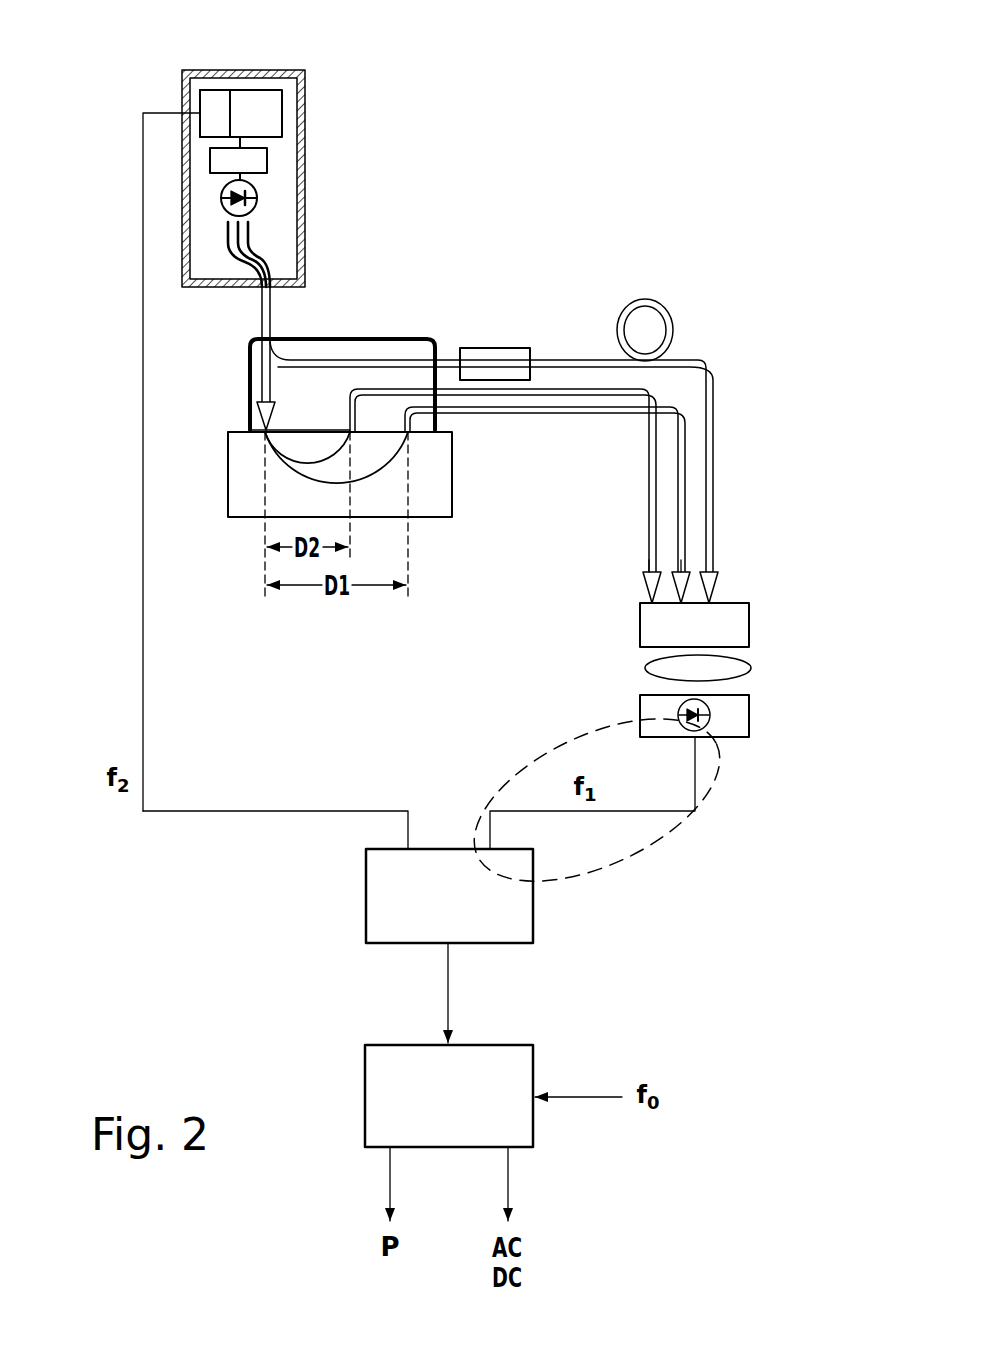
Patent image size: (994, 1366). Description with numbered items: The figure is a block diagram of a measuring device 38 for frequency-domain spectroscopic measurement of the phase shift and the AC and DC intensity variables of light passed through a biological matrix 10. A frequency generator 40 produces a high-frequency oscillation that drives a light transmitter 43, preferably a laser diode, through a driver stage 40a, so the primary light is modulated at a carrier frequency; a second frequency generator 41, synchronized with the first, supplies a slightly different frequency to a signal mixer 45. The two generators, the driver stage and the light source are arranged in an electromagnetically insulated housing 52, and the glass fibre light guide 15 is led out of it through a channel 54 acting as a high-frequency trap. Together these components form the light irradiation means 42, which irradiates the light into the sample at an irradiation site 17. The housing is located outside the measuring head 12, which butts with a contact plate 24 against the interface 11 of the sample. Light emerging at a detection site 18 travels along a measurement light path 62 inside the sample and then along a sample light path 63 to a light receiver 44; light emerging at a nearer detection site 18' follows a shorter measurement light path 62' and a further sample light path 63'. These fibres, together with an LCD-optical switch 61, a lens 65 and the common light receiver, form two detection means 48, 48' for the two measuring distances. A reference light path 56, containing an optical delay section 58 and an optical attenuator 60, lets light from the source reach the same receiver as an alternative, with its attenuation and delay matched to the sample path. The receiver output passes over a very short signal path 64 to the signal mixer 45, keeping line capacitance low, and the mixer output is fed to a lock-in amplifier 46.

The biological matrix 10 is at (457, 458).
The interface 11 is at (244, 426).
The measuring head 12 is at (248, 356).
The glass fibre light guide 15 is at (271, 320).
The irradiation site 17 is at (262, 437).
The detection site 18 is at (455, 497).
The detection site 18' is at (403, 497).
The contact plate 24 is at (292, 423).
The measuring device 38 is at (556, 260).
The frequency generator 40 is at (265, 115).
The driver stage 40a is at (258, 165).
The second frequency generator 41 is at (217, 100).
The light irradiation means 42 is at (338, 288).
The light transmitter 43 is at (221, 201).
The light receiver 44 is at (735, 718).
The signal mixer 45 is at (463, 912).
The lock-in amplifier 46 is at (463, 1107).
The detection means 48 is at (730, 552).
The detection means 48' is at (617, 552).
The housing 52 is at (183, 92).
The channel 54 is at (280, 238).
The reference light path 56 is at (565, 358).
The optical delay section 58 is at (673, 318).
The optical attenuator 60 is at (483, 348).
The LCD-optical switch 61 is at (735, 625).
The measurement light path 62 is at (254, 473).
The measurement light path 62' is at (294, 496).
The sample light path 63 is at (547, 505).
The further sample light path 63' is at (505, 496).
The signal path 64 is at (648, 838).
The lens 65 is at (740, 669).